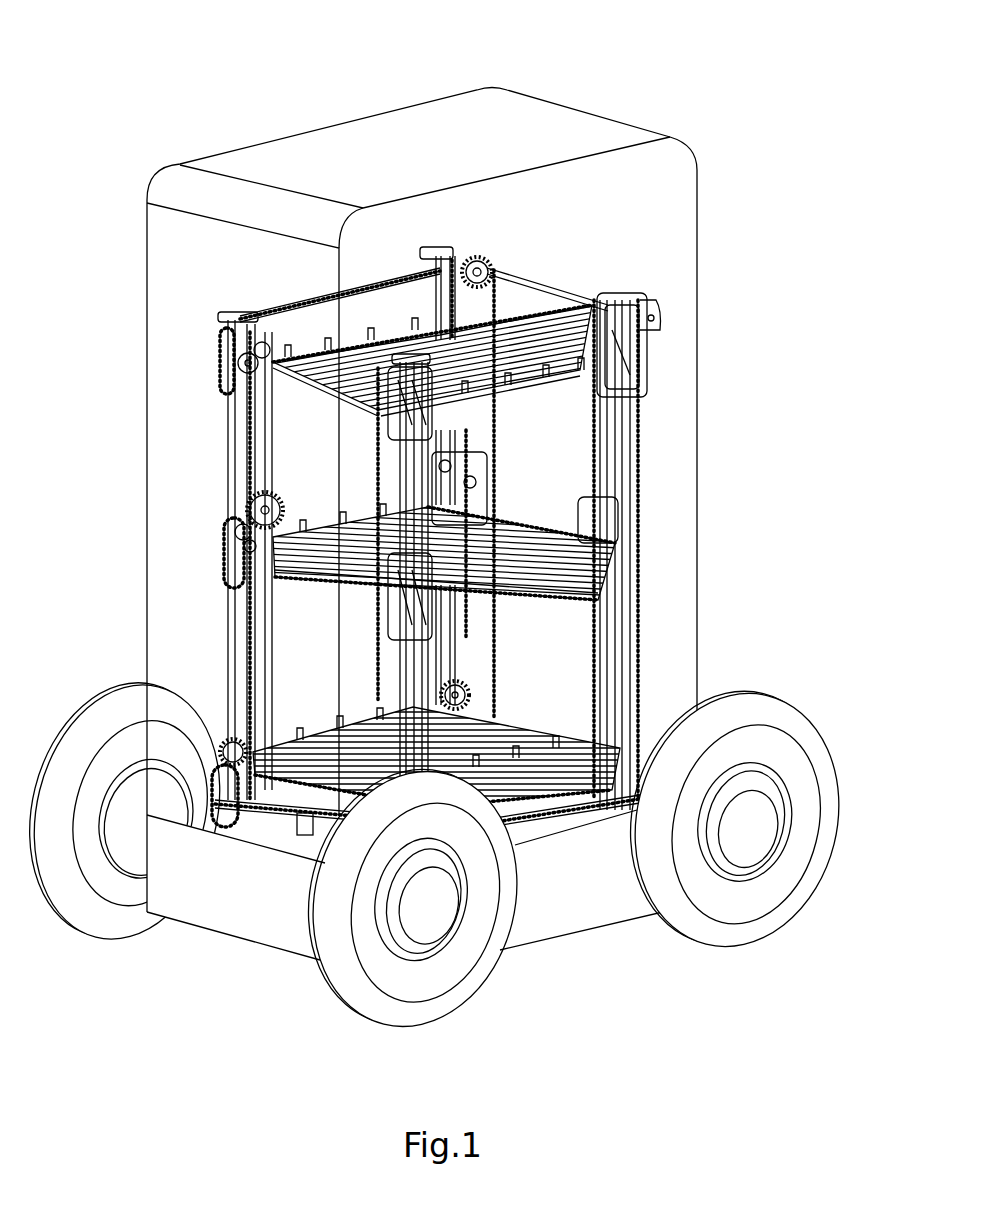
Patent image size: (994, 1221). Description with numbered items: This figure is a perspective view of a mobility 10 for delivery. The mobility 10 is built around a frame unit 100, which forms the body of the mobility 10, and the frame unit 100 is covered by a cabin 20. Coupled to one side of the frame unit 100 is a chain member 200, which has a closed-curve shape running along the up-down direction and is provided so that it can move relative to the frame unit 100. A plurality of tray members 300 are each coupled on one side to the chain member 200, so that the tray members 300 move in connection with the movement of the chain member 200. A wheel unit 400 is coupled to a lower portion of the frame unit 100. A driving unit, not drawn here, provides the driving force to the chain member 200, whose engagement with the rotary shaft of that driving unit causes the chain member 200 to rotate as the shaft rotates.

The mobility 10 is at (173, 47).
The cabin 20 is at (420, 143).
The frame unit 100 is at (617, 275).
The chain member 200 is at (370, 413).
The tray member 300 is at (463, 753).
The wheel unit 400 is at (733, 933).